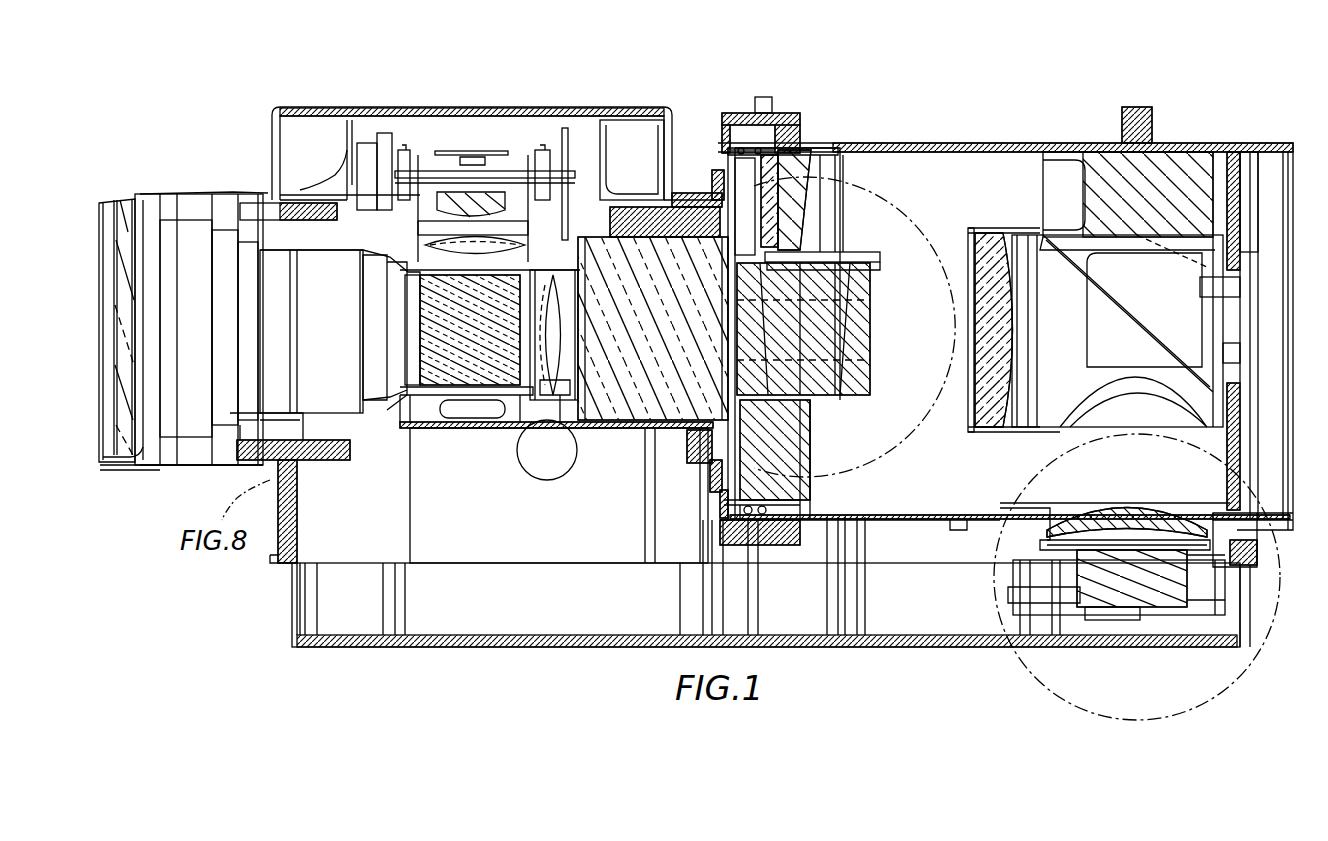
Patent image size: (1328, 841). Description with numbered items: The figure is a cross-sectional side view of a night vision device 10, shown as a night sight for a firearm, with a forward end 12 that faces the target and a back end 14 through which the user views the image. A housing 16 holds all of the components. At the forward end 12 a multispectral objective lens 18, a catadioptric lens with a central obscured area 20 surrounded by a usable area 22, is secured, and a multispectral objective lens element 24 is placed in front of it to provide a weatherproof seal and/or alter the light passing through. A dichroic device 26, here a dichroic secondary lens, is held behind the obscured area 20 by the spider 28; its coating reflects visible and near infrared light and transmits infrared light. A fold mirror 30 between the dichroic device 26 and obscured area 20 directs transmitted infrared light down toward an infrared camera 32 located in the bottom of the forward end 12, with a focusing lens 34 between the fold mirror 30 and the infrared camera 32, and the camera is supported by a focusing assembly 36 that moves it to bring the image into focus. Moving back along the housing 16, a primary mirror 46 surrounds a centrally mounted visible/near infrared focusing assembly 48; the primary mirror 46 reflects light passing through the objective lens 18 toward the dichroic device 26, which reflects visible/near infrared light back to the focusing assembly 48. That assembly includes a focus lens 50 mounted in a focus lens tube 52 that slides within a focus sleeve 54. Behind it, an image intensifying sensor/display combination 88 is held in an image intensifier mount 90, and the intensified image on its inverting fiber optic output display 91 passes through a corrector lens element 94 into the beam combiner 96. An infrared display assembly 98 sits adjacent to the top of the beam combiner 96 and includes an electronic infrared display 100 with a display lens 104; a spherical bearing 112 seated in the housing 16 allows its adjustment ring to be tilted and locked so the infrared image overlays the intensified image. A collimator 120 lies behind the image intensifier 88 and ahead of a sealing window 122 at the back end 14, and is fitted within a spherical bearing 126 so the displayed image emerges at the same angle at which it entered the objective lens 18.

The night vision device 10 is at (695, 50).
The forward end 12 is at (1283, 112).
The back end 14 is at (122, 474).
The housing 16 is at (140, 472).
The multispectral objective lens 18 is at (1233, 150).
The central obscured area 20 is at (1240, 305).
The usable area 22 is at (1250, 200).
The multispectral objective lens element 24 is at (1288, 463).
The dichroic device 26 is at (987, 255).
The spider 28 is at (1150, 178).
The fold mirror 30 is at (1078, 265).
The infrared camera 32 is at (1072, 600).
The focusing lens 34 is at (1137, 515).
The focusing assembly 36 is at (1233, 680).
The primary mirror 46 is at (798, 500).
The visible/near infrared focusing assembly 48 is at (873, 462).
The focus lens 50 is at (818, 355).
The focus lens tube 52 is at (800, 258).
The focus sleeve 54 is at (838, 262).
The image intensifying sensor/display combination 88 is at (660, 215).
The image intensifier mount 90 is at (688, 192).
The inverting fiber optic output display 91 is at (587, 325).
The corrector lens element 94 is at (562, 345).
The beam combiner 96 is at (473, 370).
The infrared display assembly 98 is at (481, 106).
The electronic infrared display 100 is at (458, 152).
The display lens 104 is at (418, 250).
The spherical bearing 112 is at (355, 170).
The collimator 120 is at (540, 438).
The sealing window 122 is at (122, 212).
The spherical bearing 126 is at (318, 462).